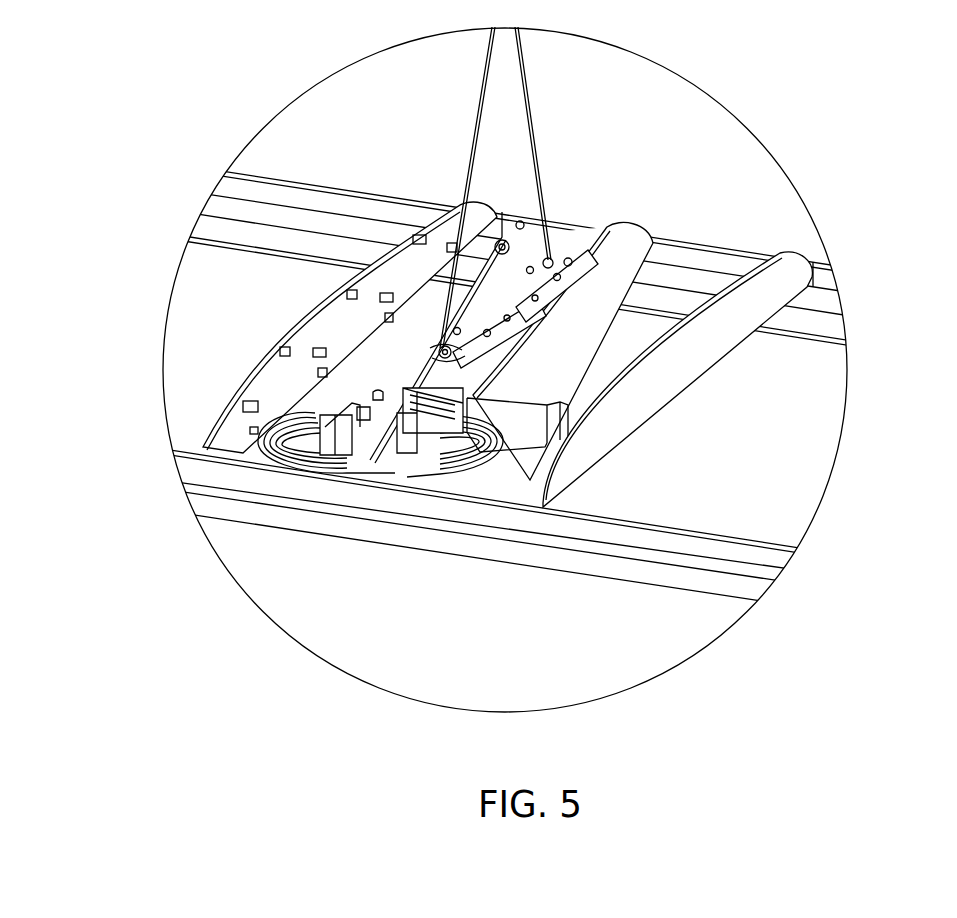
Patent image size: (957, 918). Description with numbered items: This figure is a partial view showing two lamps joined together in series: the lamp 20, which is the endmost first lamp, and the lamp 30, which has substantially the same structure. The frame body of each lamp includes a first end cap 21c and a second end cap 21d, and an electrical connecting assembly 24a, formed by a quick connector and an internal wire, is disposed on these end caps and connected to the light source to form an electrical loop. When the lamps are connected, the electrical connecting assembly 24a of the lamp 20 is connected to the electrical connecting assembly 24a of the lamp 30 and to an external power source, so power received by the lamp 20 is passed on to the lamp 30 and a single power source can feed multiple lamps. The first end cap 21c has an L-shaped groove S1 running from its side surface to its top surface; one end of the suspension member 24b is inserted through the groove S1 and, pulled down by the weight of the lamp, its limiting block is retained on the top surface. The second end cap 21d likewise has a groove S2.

The lamp 20 is at (208, 110).
The lamp 30 is at (858, 197).
The first end cap 21c is at (497, 485).
The second end cap 21d is at (253, 450).
The electrical connecting assembly 24a is at (367, 415).
The suspension member 24b is at (538, 165).
The groove S1 is at (487, 349).
The groove S2 is at (430, 352).